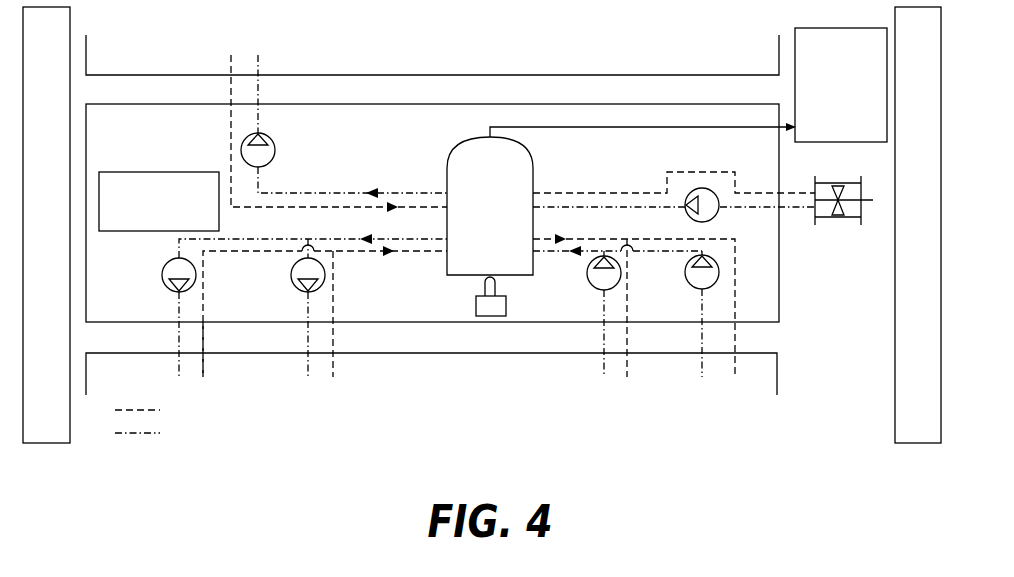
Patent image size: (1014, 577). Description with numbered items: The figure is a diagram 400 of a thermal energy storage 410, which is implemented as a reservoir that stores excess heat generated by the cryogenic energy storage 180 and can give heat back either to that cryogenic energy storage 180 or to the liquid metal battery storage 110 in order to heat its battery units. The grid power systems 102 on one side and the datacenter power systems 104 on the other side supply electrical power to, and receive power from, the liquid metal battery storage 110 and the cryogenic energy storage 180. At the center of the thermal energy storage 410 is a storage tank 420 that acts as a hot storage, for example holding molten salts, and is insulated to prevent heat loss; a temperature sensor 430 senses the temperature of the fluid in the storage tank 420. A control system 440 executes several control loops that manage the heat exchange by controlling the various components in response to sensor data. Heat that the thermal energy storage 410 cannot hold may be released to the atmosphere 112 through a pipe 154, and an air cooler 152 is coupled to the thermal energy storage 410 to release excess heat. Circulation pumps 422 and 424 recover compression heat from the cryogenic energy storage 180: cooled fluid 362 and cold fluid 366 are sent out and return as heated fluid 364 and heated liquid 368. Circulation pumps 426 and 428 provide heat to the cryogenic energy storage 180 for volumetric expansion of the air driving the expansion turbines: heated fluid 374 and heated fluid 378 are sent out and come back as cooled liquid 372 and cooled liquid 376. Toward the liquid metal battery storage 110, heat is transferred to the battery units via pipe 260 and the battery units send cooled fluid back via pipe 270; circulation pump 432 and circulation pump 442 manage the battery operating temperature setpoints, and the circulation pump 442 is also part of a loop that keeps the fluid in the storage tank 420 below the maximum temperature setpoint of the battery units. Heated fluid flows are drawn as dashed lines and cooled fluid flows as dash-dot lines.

The grid power systems 102 is at (46, 225).
The datacenter power systems 104 is at (918, 225).
The liquid metal battery storage 110 is at (432, 54).
The atmosphere 112 is at (841, 85).
The air cooler 152 is at (850, 218).
The pipe 154 is at (760, 127).
The cryogenic energy storage 180 is at (431, 374).
The pipe 260 is at (230, 92).
The pipe 270 is at (262, 92).
The cooled fluid 362 is at (178, 343).
The heated fluid 364 is at (203, 337).
The cold fluid 366 is at (307, 343).
The heated liquid 368 is at (334, 337).
The cooled liquid 372 is at (604, 343).
The heated fluid 374 is at (627, 335).
The cooled liquid 376 is at (702, 343).
The heated fluid 378 is at (737, 337).
The thermal management system 400 is at (482, 246).
The thermal energy storage 410 is at (432, 213).
The storage tank 420 is at (490, 206).
The circulation pump 422 is at (161, 278).
The circulation pump 424 is at (291, 278).
The circulation pump 426 is at (587, 277).
The circulation pump 428 is at (685, 285).
The temperature sensor 430 is at (476, 308).
The circulation pump 432 is at (276, 150).
The control system 440 is at (159, 201).
The circulation pump 442 is at (714, 218).